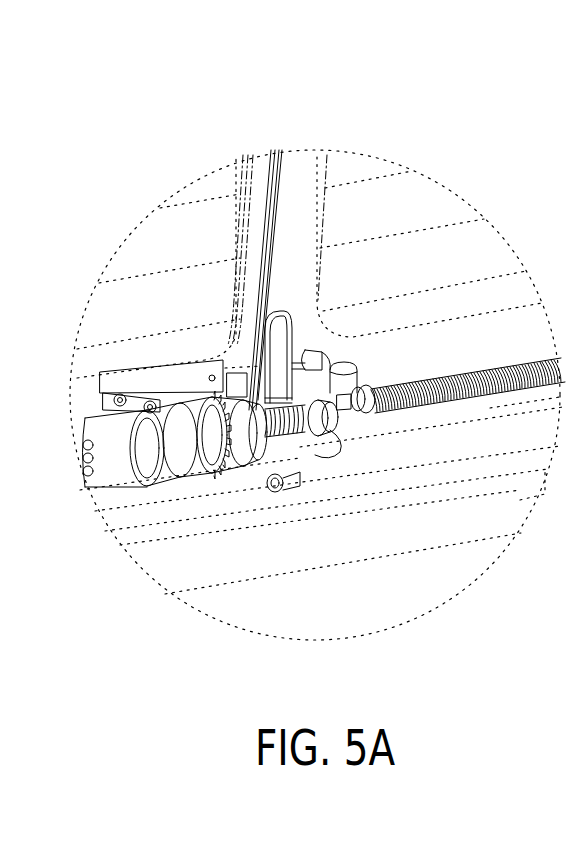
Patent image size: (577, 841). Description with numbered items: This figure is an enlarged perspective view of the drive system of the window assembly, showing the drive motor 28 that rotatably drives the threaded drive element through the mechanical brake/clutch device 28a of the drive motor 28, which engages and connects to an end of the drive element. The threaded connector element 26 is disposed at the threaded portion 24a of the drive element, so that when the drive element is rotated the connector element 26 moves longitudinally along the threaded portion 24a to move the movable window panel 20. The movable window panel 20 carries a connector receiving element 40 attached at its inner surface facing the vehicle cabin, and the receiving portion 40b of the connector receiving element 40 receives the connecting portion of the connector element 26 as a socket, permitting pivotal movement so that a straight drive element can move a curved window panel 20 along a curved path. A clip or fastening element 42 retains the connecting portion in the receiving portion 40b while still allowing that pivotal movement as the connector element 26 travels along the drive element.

The movable window panel 20 is at (357, 160).
The threaded portion 24a is at (447, 390).
The threaded connector element 26 is at (328, 415).
The drive motor 28 is at (150, 441).
The mechanical brake/clutch device 28a is at (240, 440).
The connector receiving element 40 is at (300, 330).
The receiving portion 40b is at (335, 362).
The clip or fastening element 42 is at (345, 390).